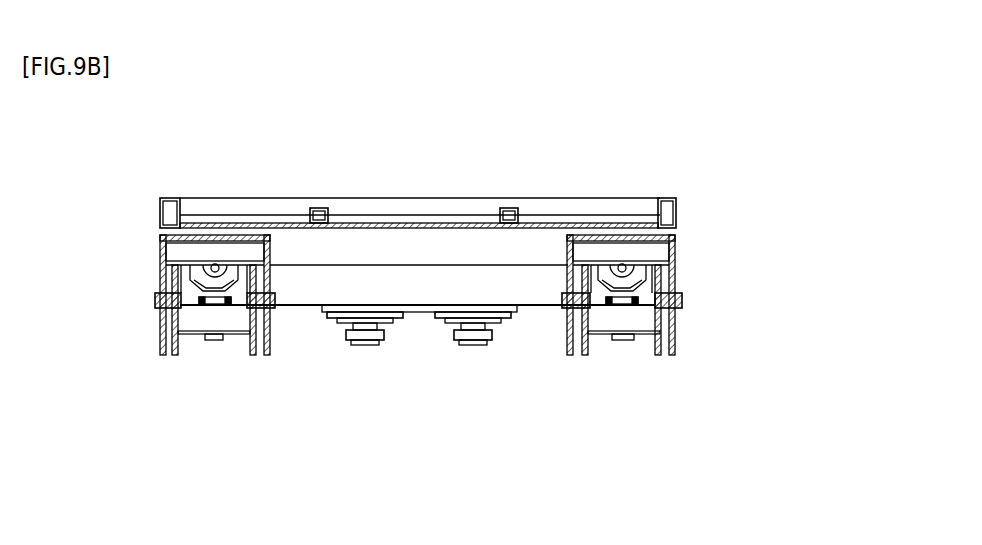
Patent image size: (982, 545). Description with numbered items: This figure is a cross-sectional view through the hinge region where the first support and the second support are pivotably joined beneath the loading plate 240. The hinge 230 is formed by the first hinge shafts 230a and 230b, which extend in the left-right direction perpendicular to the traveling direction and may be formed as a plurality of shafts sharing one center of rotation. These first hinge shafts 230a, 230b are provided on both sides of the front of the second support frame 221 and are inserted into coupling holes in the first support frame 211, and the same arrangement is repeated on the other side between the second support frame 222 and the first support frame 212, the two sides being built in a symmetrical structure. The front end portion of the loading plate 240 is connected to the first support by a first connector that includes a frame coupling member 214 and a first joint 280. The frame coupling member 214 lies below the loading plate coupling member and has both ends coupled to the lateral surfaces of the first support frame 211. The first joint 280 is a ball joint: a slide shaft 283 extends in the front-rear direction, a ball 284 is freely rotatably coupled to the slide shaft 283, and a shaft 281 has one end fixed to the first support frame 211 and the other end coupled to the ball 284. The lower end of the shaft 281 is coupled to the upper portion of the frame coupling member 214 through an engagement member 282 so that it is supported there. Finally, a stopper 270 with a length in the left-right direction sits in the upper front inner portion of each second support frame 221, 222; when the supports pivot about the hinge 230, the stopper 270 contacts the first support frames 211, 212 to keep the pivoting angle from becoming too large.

The loading plate 240 is at (160, 218).
The stopper 270 is at (676, 228).
The second support frame 221 is at (160, 256).
The second support frame 222 is at (676, 256).
The first support frame 211 is at (162, 350).
The first support frame 212 is at (676, 343).
The frame coupling member 214 is at (190, 330).
The first joint 280 is at (203, 314).
The shaft 281 is at (234, 320).
The engagement member 282 is at (215, 304).
The slide shaft 283 is at (209, 262).
The ball 284 is at (212, 268).
The hinge 230 is at (420, 353).
The first hinge shaft 230a is at (155, 300).
The first hinge shaft 230b is at (276, 308).